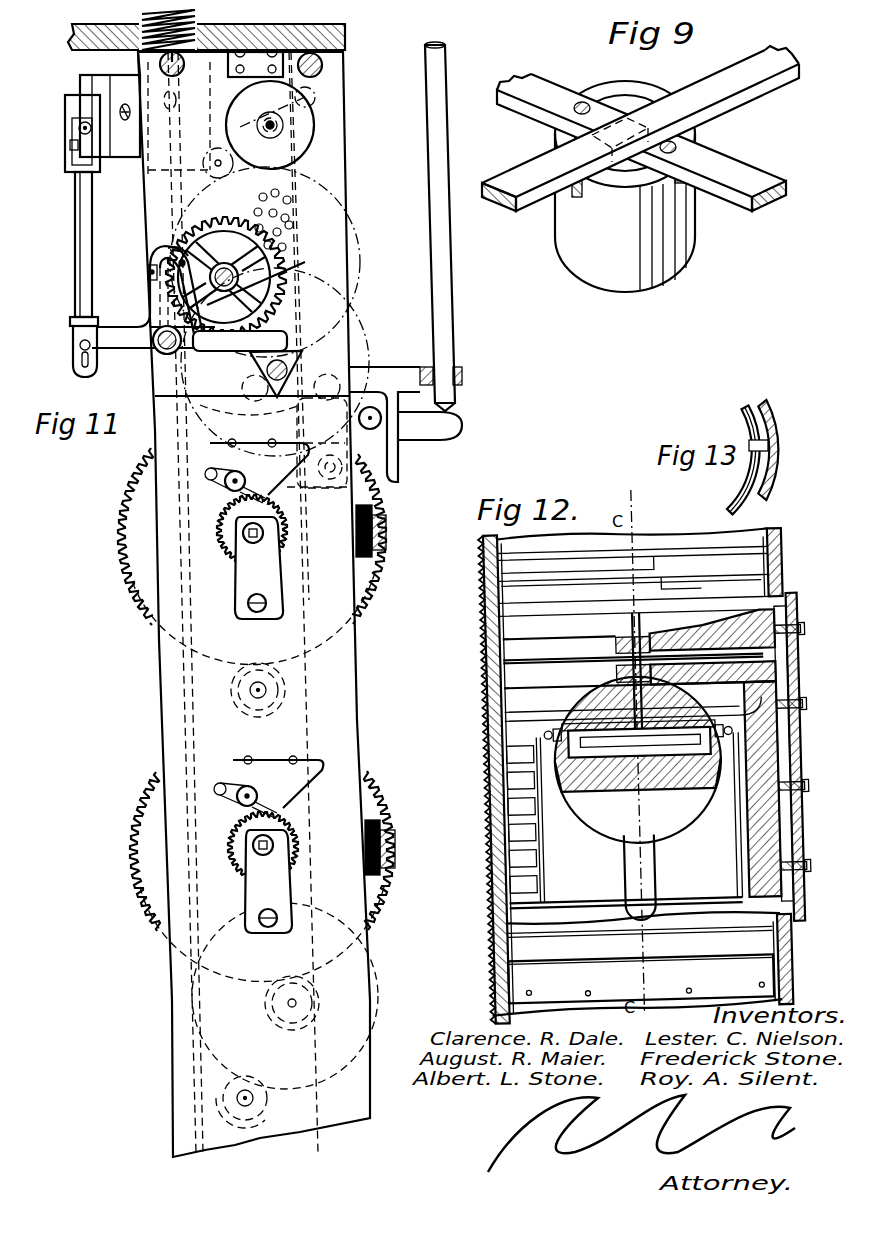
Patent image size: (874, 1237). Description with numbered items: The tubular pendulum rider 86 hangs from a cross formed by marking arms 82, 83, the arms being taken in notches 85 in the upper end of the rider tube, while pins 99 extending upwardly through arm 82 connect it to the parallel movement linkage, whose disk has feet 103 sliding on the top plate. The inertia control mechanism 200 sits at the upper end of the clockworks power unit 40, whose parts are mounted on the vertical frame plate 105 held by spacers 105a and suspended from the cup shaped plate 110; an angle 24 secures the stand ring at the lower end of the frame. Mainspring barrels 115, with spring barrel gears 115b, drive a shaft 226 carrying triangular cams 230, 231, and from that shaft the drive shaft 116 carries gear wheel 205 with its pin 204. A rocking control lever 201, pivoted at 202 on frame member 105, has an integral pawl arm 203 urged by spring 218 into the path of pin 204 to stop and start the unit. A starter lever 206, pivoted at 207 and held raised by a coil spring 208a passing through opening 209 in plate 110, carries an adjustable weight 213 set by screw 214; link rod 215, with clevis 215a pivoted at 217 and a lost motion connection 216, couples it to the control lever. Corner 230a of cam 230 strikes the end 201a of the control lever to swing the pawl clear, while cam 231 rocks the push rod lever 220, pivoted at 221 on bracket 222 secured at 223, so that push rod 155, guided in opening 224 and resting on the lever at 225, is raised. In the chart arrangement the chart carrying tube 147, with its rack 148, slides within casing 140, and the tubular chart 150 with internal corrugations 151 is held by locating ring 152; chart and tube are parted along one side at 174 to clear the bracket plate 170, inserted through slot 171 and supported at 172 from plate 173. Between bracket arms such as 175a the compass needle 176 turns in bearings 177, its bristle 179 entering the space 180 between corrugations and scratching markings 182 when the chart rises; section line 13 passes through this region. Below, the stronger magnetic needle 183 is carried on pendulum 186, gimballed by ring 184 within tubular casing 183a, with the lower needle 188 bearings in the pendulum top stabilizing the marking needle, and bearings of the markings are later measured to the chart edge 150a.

In FIG. 11, the opening 209 is at (140, 24).
In FIG. 11, the coil spring 208a is at (142, 56).
In FIG. 11, the starter lever 206 is at (88, 108).
In FIG. 11, the pivotal connection 217 is at (80, 130).
In FIG. 11, the clevis 215a is at (72, 165).
In FIG. 11, the inertia control mechanism 200 is at (68, 216).
In FIG. 11, the weight 213 is at (120, 157).
In FIG. 11, the screw 214 is at (135, 160).
In FIG. 11, the link rod 215 is at (75, 284).
In FIG. 11, the pin 204 is at (172, 252).
In FIG. 11, the spring 218 is at (148, 277).
In FIG. 11, the pawl arm 203 is at (163, 292).
In FIG. 11, the lost motion connection 216 is at (80, 347).
In FIG. 11, the control lever 201 is at (132, 345).
In FIG. 11, the pivot 202 is at (162, 352).
In FIG. 11, the cam corner 230a is at (253, 356).
In FIG. 11, the control lever end 201a is at (278, 343).
In FIG. 11, the triangular cam 230 is at (284, 365).
In FIG. 11, the triangular cam 231 is at (252, 419).
In FIG. 11, the shaft 226 is at (373, 406).
In FIG. 11, the bracket 222 is at (379, 378).
In FIG. 11, the guide opening 224 is at (462, 370).
In FIG. 11, the rest point 225 is at (452, 408).
In FIG. 11, the push rod lever 220 is at (423, 440).
In FIG. 11, the pivot 221 is at (376, 425).
In FIG. 11, the push rod 155 is at (452, 296).
In FIG. 11, the shaft 116 is at (228, 272).
In FIG. 11, the gear wheel 205 is at (305, 262).
In FIG. 11, the pivot 207 is at (316, 97).
In FIG. 11, the cup shaped plate 110 is at (344, 38).
In FIG. 11, the feet 103 is at (262, 54).
In FIG. 11, the spacers 105a is at (184, 64).
In FIG. 11, the securing point 223 is at (330, 480).
In FIG. 11, the mainspring barrels 115 is at (365, 580).
In FIG. 11, the spring barrel gears 115b is at (157, 595).
In FIG. 11, the clockworks mechanism 40 is at (143, 676).
In FIG. 11, the angle 24 is at (236, 688).
In FIG. 11, the vertical frame plate 105 is at (345, 690).
In FIG. 9, the pins 99 is at (576, 112).
In FIG. 9, the notches 85 is at (572, 185).
In FIG. 9, the marking arm 83 is at (640, 128).
In FIG. 9, the marking arm 82 is at (641, 142).
In FIG. 9, the tubular pendulum rider 86 is at (625, 186).
In FIG. 13, the tubular chart 150 is at (753, 408).
In FIG. 12, the tubular chart 150 is at (676, 548).
In FIG. 13, the chart carrying tube 147 is at (752, 403).
In FIG. 12, the chart carrying tube 147 is at (497, 534).
In FIG. 13, the casing 140 is at (776, 428).
In FIG. 12, the casing 140 is at (786, 552).
In FIG. 13, the slot 174 is at (750, 450).
In FIG. 12, the slot 174 is at (772, 582).
In FIG. 12, the chart edge 150a is at (762, 538).
In FIG. 12, the section line 13 is at (735, 561).
In FIG. 12, the annular corrugations 151 is at (553, 566).
In FIG. 12, the markings 182 is at (636, 582).
In FIG. 12, the bristle 179 is at (513, 658).
In FIG. 12, the bearings 177 is at (628, 637).
In FIG. 12, the compass needle 176 is at (673, 635).
In FIG. 12, the space 180 is at (510, 675).
In FIG. 12, the vertical plate 170 is at (796, 612).
In FIG. 12, the vertical slot 171 is at (780, 678).
In FIG. 12, the arm 175a is at (684, 688).
In FIG. 12, the rack 148 is at (500, 713).
In FIG. 12, the ring 184 is at (742, 736).
In FIG. 12, the support 172 is at (797, 788).
In FIG. 12, the magnetic needle 183 is at (588, 745).
In FIG. 12, the pendulum 186 is at (637, 843).
In FIG. 12, the lower needle 188 is at (655, 740).
In FIG. 12, the plate 173 is at (797, 841).
In FIG. 12, the tubular casing 183a is at (537, 882).
In FIG. 12, the chart locating ring 152 is at (518, 987).